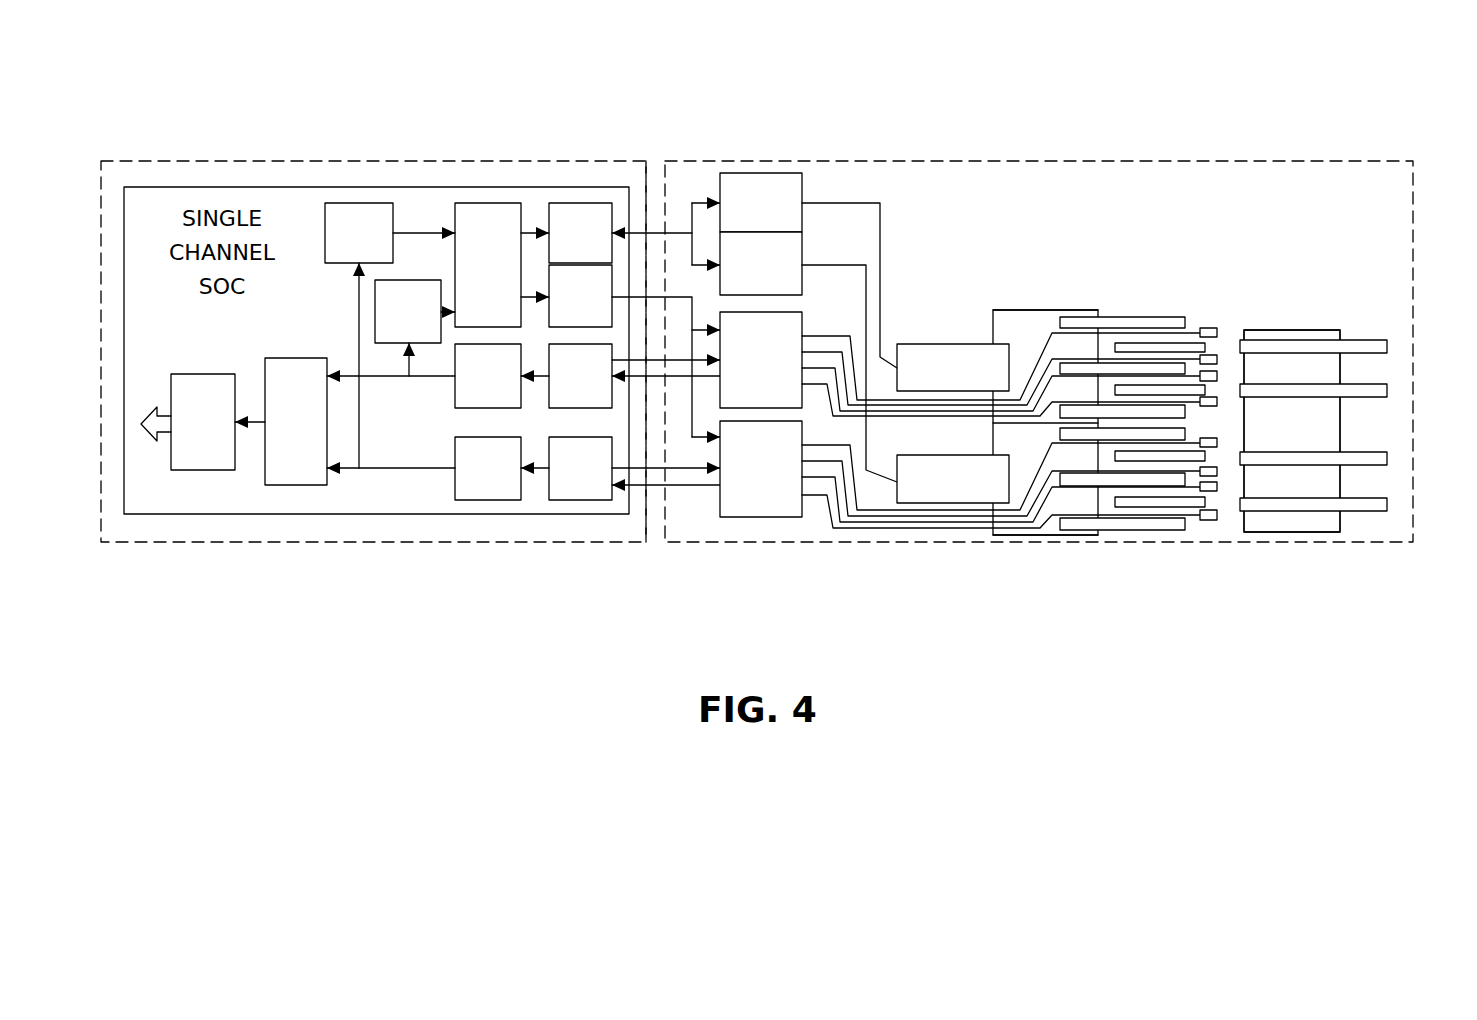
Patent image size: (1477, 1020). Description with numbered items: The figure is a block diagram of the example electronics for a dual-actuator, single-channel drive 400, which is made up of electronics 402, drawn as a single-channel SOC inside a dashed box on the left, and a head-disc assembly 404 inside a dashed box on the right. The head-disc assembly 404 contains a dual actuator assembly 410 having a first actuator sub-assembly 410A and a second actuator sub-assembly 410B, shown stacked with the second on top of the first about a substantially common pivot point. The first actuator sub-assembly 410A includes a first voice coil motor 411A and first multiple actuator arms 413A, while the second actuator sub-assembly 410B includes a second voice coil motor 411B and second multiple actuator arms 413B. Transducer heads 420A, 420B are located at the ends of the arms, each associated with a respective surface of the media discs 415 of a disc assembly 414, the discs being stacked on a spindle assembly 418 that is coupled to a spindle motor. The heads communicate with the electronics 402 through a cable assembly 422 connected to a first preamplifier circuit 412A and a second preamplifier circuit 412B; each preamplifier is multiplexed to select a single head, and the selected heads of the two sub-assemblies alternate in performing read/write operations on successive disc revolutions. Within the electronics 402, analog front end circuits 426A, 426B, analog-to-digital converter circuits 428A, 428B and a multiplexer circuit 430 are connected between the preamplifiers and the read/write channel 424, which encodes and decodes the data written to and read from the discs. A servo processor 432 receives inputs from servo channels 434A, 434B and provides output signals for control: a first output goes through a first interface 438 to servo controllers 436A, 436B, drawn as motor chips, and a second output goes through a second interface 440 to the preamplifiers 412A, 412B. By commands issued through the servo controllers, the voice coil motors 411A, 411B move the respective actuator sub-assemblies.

The dual-actuator, single-channel drive 400 is at (1262, 71).
The electronics 402 is at (198, 161).
The head-disc assembly 404 is at (966, 161).
The dual actuator assembly 410 is at (1050, 235).
The first actuator sub-assembly 410A is at (1197, 558).
The second actuator sub-assembly 410B is at (1035, 295).
The first voice coil motor 411A is at (906, 455).
The second voice coil motor 411B is at (928, 344).
The first preamplifier circuit 412A is at (802, 512).
The second preamplifier circuit 412B is at (802, 325).
The first multiple actuator arms 413A is at (1123, 480).
The second multiple actuator arms 413B is at (1122, 365).
The disc assembly 414 is at (1372, 321).
The media discs 415 is at (1387, 346).
The spindle assembly 418 is at (1328, 287).
The transducer heads 420A is at (1217, 443).
The transducer heads 420B is at (1217, 401).
The cable assembly 422 is at (664, 503).
The read/write channel 424 is at (171, 463).
The analog front end circuit 426A is at (549, 490).
The analog front end circuit 426B is at (613, 396).
The analog-to-digital converter circuit 428A is at (455, 490).
The analog-to-digital converter circuit 428B is at (455, 390).
The multiplexer circuit 430 is at (265, 463).
The servo processor 432 is at (492, 203).
The servo channel 434A is at (412, 280).
The servo channel 434B is at (325, 226).
The servo controller 436A is at (802, 247).
The servo controller 436B is at (802, 189).
The first interface 438 is at (580, 203).
The second interface 440 is at (613, 283).